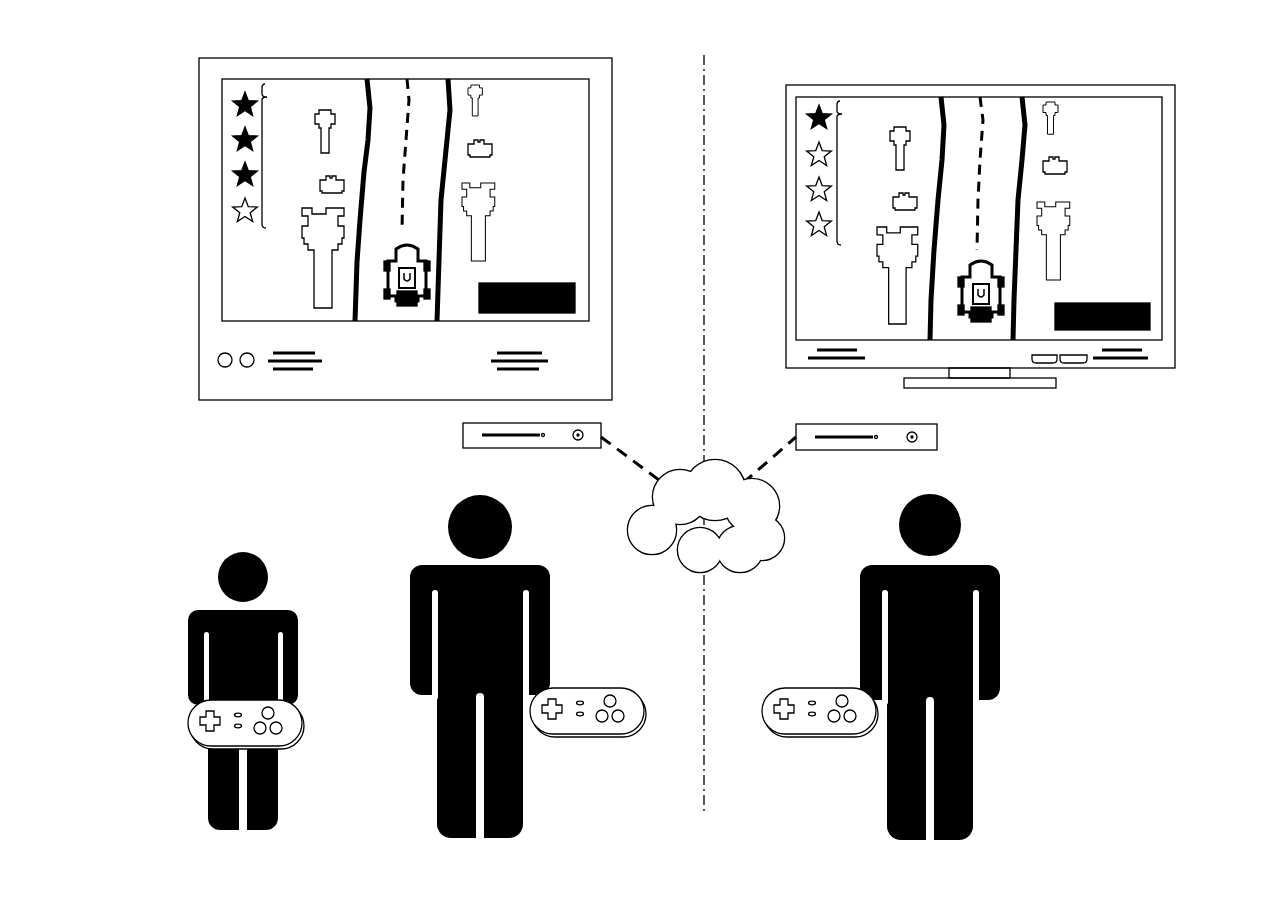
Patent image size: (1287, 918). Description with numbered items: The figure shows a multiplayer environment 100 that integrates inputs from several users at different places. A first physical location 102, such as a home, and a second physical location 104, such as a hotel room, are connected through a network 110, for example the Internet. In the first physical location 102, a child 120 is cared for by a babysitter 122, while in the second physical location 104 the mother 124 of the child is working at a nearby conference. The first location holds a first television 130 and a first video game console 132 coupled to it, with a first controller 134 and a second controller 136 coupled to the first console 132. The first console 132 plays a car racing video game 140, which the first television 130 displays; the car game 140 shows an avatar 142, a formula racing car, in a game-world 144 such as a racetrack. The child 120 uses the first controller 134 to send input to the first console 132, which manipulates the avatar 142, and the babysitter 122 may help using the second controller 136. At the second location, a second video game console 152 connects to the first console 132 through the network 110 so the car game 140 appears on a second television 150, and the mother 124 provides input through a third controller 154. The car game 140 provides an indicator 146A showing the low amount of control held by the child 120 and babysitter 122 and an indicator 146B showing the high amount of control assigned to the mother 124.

The multiplayer environment 100 is at (1162, 780).
The first physical location 102 is at (378, 520).
The second physical location 104 is at (1050, 538).
The network 110 is at (718, 528).
The child 120 is at (260, 538).
The babysitter 122 is at (516, 495).
The mother 124 is at (968, 495).
The first television 130 is at (603, 211).
The first video game console 132 is at (468, 428).
The first controller 134 is at (300, 722).
The second controller 136 is at (626, 690).
The car racing video game 140 is at (577, 148).
The avatar 142 is at (386, 312).
The game-world 144 is at (550, 126).
The indicator 146A is at (275, 156).
The indicator 146B is at (851, 173).
The second television 150 is at (1167, 348).
The second video game console 152 is at (935, 435).
The third controller 154 is at (780, 728).